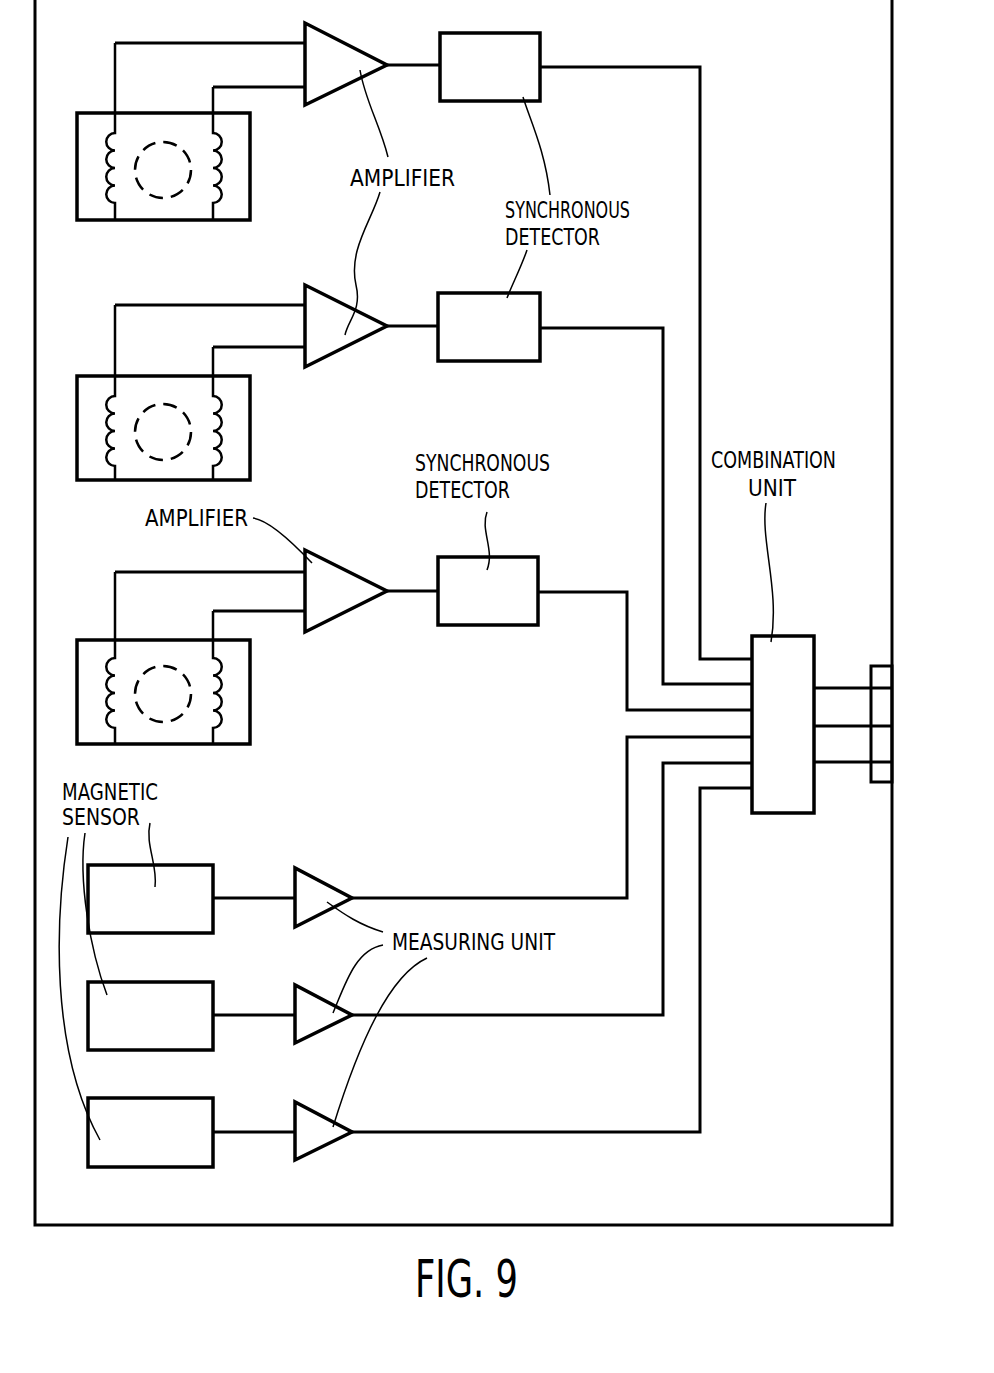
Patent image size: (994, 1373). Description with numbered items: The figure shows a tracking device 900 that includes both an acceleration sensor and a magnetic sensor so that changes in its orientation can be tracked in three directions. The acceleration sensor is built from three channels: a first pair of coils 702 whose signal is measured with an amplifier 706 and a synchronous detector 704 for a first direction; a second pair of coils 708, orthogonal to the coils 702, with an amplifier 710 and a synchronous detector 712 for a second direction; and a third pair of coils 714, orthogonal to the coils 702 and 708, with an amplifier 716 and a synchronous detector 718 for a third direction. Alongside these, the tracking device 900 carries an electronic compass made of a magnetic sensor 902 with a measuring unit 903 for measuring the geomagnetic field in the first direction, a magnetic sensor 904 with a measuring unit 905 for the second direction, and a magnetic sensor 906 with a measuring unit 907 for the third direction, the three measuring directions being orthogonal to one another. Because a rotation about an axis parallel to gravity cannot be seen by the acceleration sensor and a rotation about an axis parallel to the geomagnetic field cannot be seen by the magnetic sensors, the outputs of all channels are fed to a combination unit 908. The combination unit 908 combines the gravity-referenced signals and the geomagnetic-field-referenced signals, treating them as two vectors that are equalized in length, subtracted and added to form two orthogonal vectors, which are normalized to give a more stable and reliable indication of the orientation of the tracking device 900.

The first pair of coils 702 is at (250, 209).
The synchronous detector 704 is at (348, 93).
The amplifier 706 is at (500, 100).
The pair of coils 708 is at (250, 470).
The amplifier 710 is at (344, 352).
The synchronous detector 712 is at (500, 359).
The pair of coils 714 is at (250, 733).
The amplifier 716 is at (348, 620).
The synchronous detector 718 is at (498, 627).
The tracking device 900 is at (781, 1228).
The magnetic sensor 902 is at (187, 882).
The measuring unit 903 is at (322, 873).
The magnetic sensor 904 is at (187, 998).
The measuring unit 905 is at (322, 988).
The magnetic sensor 906 is at (187, 1115).
The measuring unit 907 is at (322, 1105).
The combination unit 908 is at (781, 813).